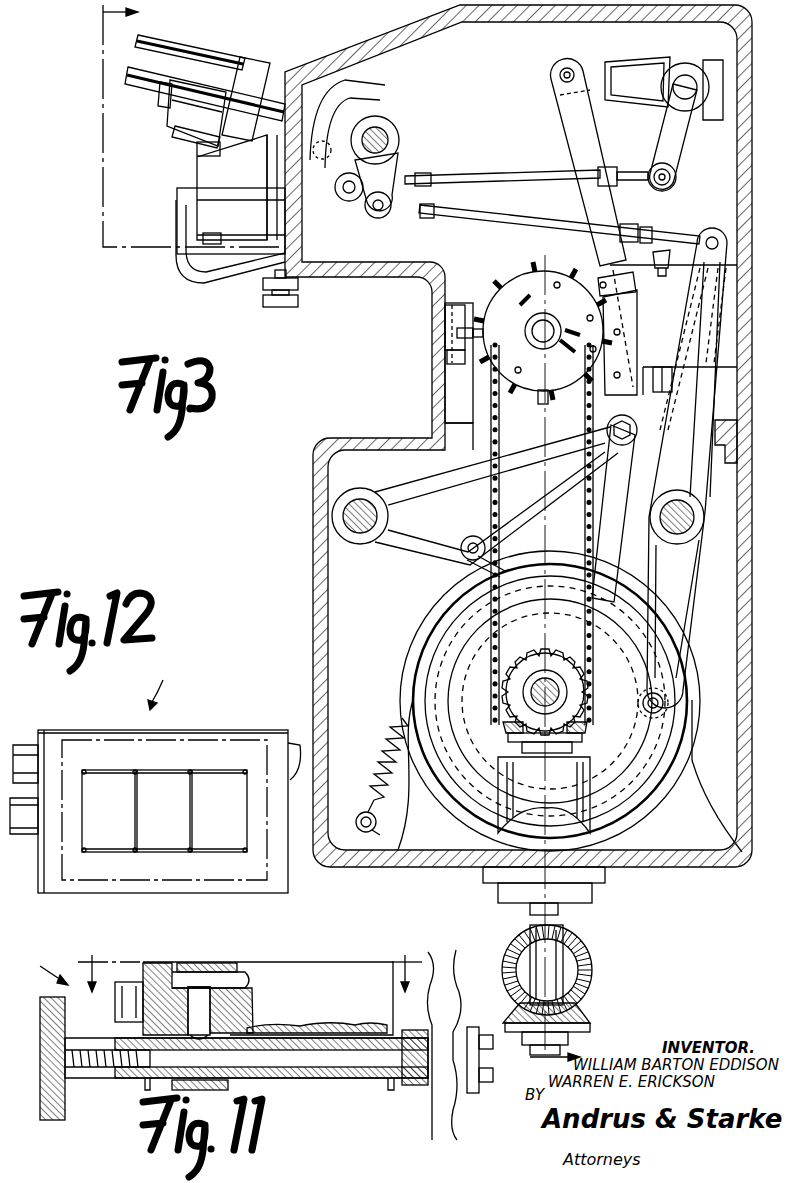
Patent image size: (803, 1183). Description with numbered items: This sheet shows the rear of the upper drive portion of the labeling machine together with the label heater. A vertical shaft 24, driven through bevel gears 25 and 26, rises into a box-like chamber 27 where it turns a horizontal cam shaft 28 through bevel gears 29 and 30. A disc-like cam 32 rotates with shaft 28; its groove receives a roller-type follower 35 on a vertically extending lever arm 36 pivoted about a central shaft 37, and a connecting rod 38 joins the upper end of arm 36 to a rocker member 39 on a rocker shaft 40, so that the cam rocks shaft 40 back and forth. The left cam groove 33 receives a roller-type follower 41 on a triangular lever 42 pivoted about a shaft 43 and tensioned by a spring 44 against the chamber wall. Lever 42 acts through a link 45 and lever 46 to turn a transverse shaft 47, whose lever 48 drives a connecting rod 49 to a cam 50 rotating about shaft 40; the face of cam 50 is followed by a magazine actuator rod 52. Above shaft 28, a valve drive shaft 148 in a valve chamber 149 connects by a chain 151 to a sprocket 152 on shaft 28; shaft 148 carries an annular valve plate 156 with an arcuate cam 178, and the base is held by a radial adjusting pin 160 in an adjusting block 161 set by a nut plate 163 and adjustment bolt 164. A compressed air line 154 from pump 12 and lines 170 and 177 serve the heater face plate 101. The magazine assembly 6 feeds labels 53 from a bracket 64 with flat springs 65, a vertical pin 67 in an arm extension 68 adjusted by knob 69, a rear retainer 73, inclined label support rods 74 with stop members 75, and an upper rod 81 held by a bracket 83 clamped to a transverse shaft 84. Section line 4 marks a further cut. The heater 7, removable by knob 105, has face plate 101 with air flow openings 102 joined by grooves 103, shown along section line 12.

In FIG. 3, the section line 4- 4 is at (324, 537).
In FIG. 3, the magazine assembly 6 is at (246, 46).
In FIG. 12, the heater 7 is at (155, 684).
In FIG. 11, the heater 7 is at (46, 970).
In FIG. 11, the pump 12 is at (254, 957).
In FIG. 3, the vertical shaft 24 is at (563, 936).
In FIG. 3, the bevel gear 25 is at (591, 980).
In FIG. 3, the bevel gear 26 is at (590, 1018).
In FIG. 3, the box-like chamber 27 is at (396, 50).
In FIG. 3, the horizontal shaft 28 is at (548, 682).
In FIG. 3, the bevel gear 29 is at (510, 742).
In FIG. 3, the bevel gear 30 is at (509, 680).
In FIG. 3, the disc-like cam 32 is at (406, 652).
In FIG. 3, the cam groove 33 is at (623, 695).
In FIG. 3, the roller-type follower 35 is at (666, 705).
In FIG. 3, the lever arm 36 is at (688, 605).
In FIG. 3, the central shaft 37 is at (670, 528).
In FIG. 3, the connecting rod 38 is at (563, 203).
In FIG. 3, the rocker member 39 is at (394, 170).
In FIG. 3, the rocker shaft 40 is at (388, 136).
In FIG. 3, the roller-type follower 41 is at (608, 566).
In FIG. 3, the lever 42 is at (416, 553).
In FIG. 3, the shaft 43 is at (378, 520).
In FIG. 3, the spring 44 is at (393, 733).
In FIG. 3, the link 45 is at (602, 236).
In FIG. 3, the lever 46 is at (618, 42).
In FIG. 3, the transverse horizontal shaft 47 is at (676, 88).
In FIG. 3, the lever 48 is at (658, 155).
In FIG. 3, the connecting rod 49 is at (507, 152).
In FIG. 3, the cam 50 is at (358, 92).
In FIG. 3, the magazine actuator rod 52 is at (326, 160).
In FIG. 12, the labels 53 is at (76, 897).
In FIG. 11, the labels 53 is at (349, 960).
In FIG. 3, the bracket 64 is at (180, 200).
In FIG. 3, the flat springs 65 is at (197, 150).
In FIG. 3, the vertical pin 67 is at (298, 284).
In FIG. 3, the arm extension 68 is at (262, 265).
In FIG. 3, the knob 69 is at (272, 307).
In FIG. 3, the rear retainer 73 is at (198, 72).
In FIG. 3, the label support rods 74 is at (118, 72).
In FIG. 3, the stop member 75 is at (152, 98).
In FIG. 3, the upper rod 81 is at (203, 22).
In FIG. 3, the bracket 83 is at (260, 63).
In FIG. 3, the transverse shaft 84 is at (252, 145).
In FIG. 12, the face plate 101 is at (70, 708).
In FIG. 11, the face plate 101 is at (156, 962).
In FIG. 12, the air flow openings 102 is at (120, 800).
In FIG. 11, the air flow openings 102 is at (204, 940).
In FIG. 12, the grooves 103 is at (206, 846).
In FIG. 11, the grooves 103 is at (228, 963).
In FIG. 11, the knob 105 is at (58, 1120).
In FIG. 3, the valve drive shaft 148 is at (545, 322).
In FIG. 3, the valve chamber 149 is at (455, 405).
In FIG. 3, the chain 151 is at (582, 492).
In FIG. 3, the sprocket 152 is at (530, 645).
In FIG. 3, the line 154 is at (665, 392).
In FIG. 3, the annular valve plate 156 is at (540, 396).
In FIG. 3, the radial adjusting pin 160 is at (462, 364).
In FIG. 3, the adjusting block 161 is at (490, 290).
In FIG. 3, the nut plate 163 is at (447, 348).
In FIG. 3, the adjustment bolt 164 is at (434, 336).
In FIG. 11, the line 170 is at (488, 1092).
In FIG. 3, the line 177 is at (655, 260).
In FIG. 11, the line 177 is at (486, 1036).
In FIG. 3, the arcuate cam 178 is at (606, 284).